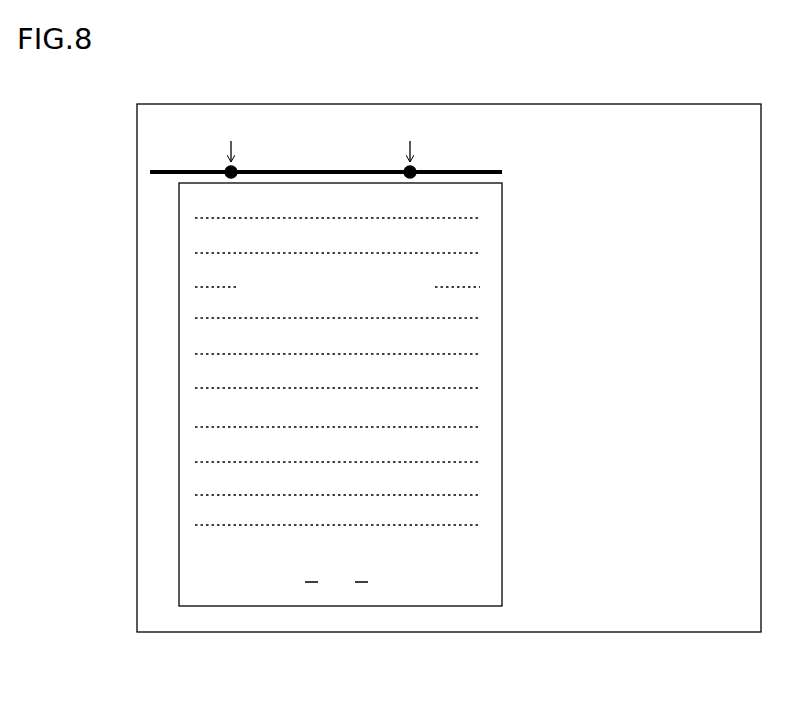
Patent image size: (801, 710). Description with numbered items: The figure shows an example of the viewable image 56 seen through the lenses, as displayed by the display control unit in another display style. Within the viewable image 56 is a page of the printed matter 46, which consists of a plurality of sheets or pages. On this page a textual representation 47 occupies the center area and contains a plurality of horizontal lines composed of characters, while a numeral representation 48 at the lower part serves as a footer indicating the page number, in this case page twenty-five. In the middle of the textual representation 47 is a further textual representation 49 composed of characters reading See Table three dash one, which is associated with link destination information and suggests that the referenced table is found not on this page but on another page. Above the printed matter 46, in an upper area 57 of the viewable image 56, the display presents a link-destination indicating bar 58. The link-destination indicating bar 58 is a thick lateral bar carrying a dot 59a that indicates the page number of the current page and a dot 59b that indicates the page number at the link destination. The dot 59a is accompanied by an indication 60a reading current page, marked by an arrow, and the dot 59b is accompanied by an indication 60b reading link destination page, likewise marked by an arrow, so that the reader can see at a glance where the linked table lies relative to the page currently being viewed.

The printed matter 46 is at (483, 607).
The textual representation 47 is at (217, 536).
The numeral representation 48 is at (324, 597).
The textual representation 49 is at (252, 305).
The viewable image 56 is at (183, 633).
The upper area 57 is at (128, 113).
The link-destination indicating bar 58 is at (160, 180).
The dot 59a is at (298, 121).
The dot 59b is at (517, 121).
The indication 60a is at (238, 168).
The indication 60b is at (417, 169).